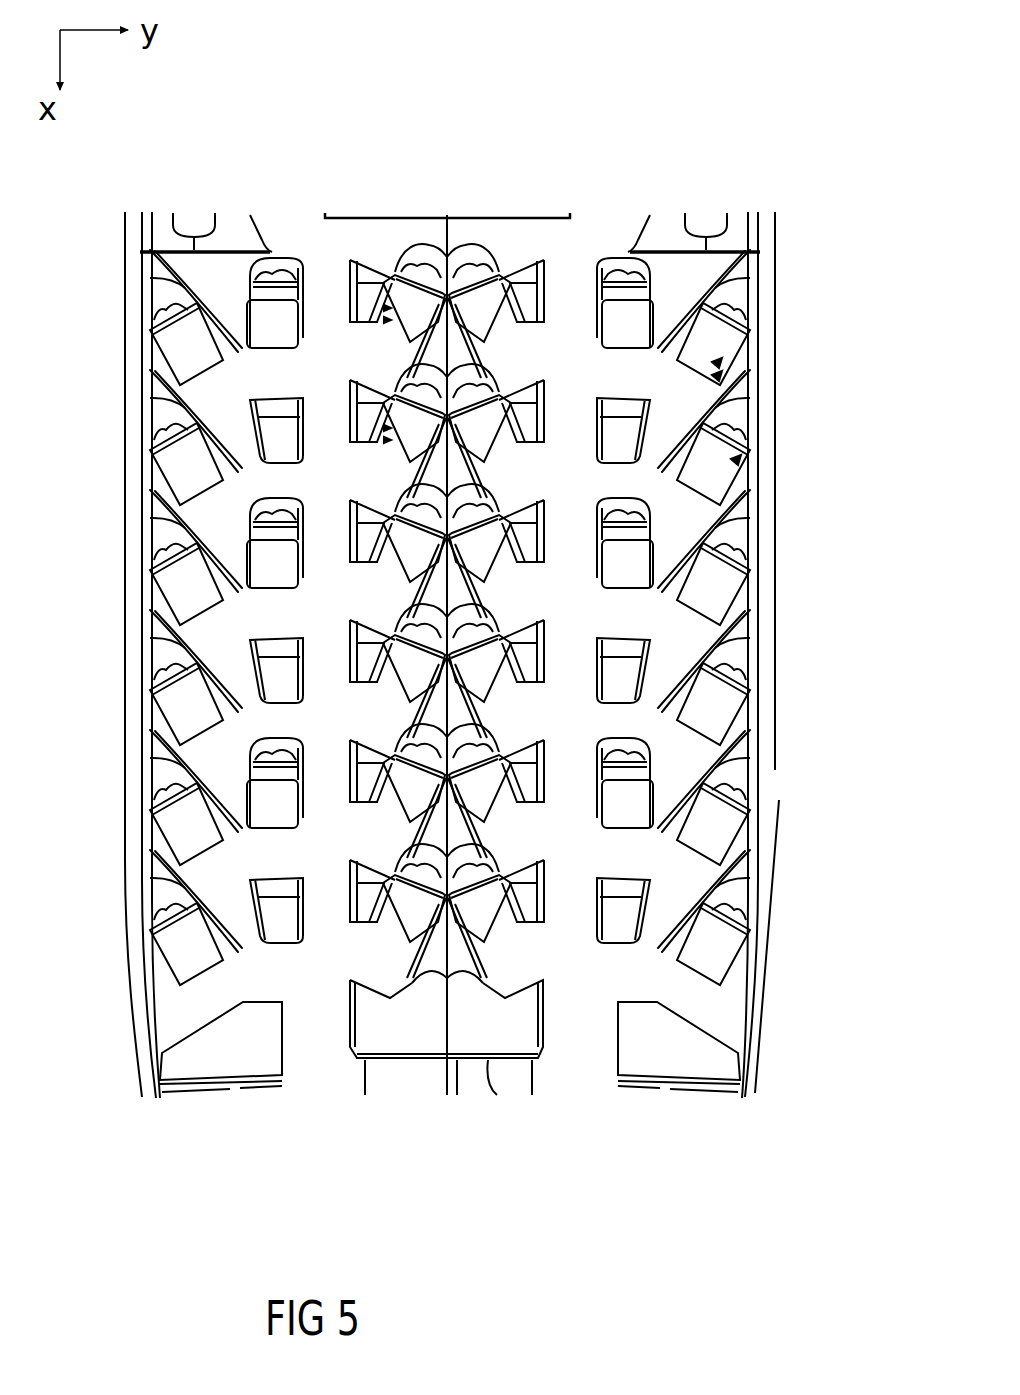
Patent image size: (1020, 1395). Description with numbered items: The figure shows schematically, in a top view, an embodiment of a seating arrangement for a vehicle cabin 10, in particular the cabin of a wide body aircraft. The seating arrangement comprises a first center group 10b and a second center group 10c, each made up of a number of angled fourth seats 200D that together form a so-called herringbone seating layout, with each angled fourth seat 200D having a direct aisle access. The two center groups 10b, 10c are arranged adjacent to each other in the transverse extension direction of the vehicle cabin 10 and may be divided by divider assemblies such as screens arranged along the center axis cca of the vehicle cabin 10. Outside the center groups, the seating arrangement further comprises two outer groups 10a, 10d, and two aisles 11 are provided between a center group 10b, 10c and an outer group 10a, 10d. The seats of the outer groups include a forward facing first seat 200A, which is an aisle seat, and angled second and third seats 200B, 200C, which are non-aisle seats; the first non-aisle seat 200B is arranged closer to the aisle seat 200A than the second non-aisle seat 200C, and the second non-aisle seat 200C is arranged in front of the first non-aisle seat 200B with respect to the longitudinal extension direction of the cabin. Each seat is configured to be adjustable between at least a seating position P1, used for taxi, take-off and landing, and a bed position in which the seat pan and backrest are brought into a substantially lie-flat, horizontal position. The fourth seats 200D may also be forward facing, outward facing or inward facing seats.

The center axis cca is at (447, 213).
The vehicle cabin 10 is at (553, 195).
The outer group 10a is at (227, 178).
The first center group 10b is at (452, 521).
The second center group 10c is at (655, 521).
The outer group 10d is at (746, 525).
The first seat 200A is at (670, 310).
The second seat 200B is at (737, 378).
The third seat 200C is at (745, 470).
The fourth seat 200D is at (386, 308).
The seating position P1 is at (657, 287).
The aisle 11 is at (456, 1119).